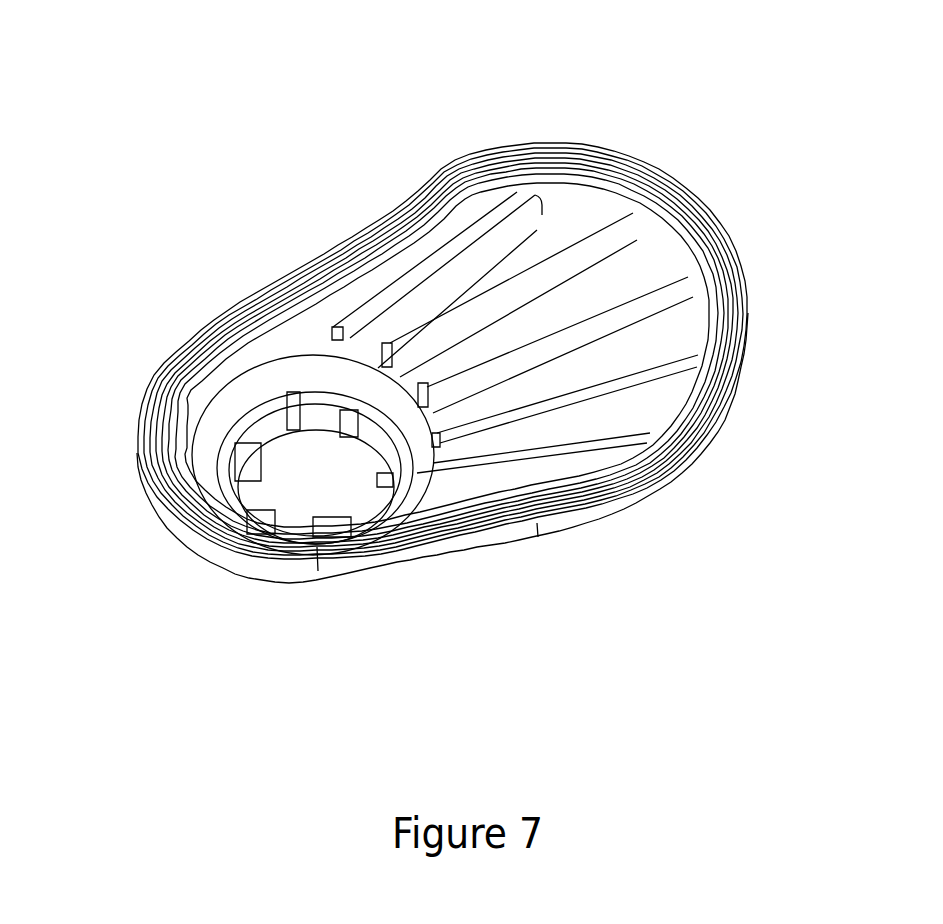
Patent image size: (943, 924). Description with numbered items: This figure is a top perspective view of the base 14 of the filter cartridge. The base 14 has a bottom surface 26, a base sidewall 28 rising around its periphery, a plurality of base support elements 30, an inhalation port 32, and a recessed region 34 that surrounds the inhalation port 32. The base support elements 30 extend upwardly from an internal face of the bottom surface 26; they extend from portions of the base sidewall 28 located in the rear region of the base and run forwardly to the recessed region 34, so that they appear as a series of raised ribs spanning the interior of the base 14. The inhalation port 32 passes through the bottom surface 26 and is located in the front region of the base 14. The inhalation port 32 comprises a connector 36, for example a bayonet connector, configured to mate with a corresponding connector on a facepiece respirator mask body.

The base 14 is at (246, 87).
The bottom surface 26 is at (633, 263).
The base sidewall 28 is at (447, 545).
The base support elements 30 is at (464, 240).
The inhalation port 32 is at (330, 490).
The recessed region 34 is at (297, 378).
The connector 36 is at (257, 513).